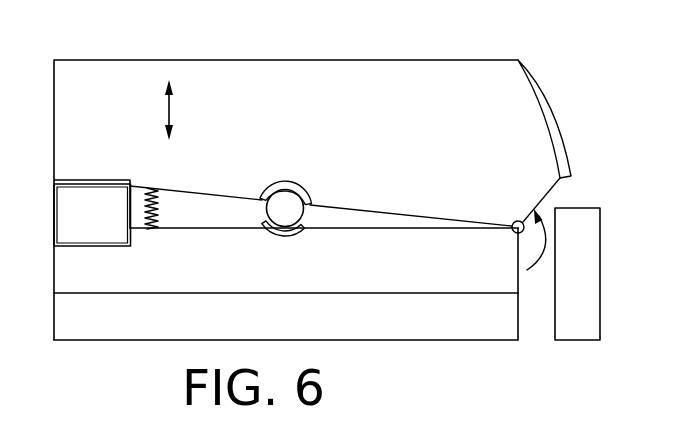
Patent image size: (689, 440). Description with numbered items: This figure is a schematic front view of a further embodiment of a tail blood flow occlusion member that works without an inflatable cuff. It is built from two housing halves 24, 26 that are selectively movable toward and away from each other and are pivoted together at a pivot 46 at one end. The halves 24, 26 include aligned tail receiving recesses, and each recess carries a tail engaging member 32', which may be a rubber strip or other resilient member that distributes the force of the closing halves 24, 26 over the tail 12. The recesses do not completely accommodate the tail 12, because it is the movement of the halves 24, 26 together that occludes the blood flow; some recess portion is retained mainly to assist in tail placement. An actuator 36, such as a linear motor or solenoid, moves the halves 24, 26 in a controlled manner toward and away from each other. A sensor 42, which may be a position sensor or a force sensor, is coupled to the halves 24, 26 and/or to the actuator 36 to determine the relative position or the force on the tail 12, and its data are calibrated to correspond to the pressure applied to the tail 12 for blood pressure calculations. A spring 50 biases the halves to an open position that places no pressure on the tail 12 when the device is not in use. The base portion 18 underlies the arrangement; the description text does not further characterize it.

The tail 12 is at (297, 220).
The base 18 is at (440, 330).
The housing half 24 is at (367, 126).
The housing half 26 is at (192, 286).
The tail engaging member 32' is at (328, 205).
The actuator 36 is at (593, 290).
The sensor 42 is at (102, 234).
The pivot 46 is at (524, 234).
The spring 50 is at (141, 200).